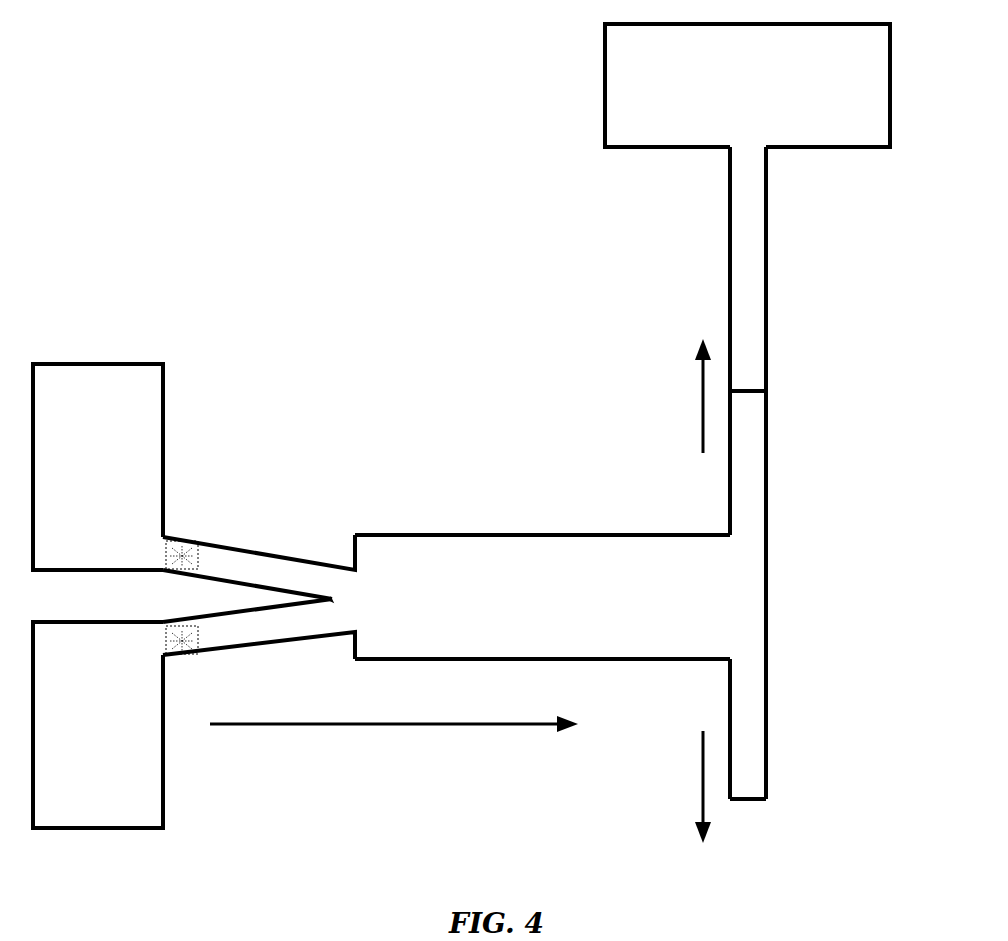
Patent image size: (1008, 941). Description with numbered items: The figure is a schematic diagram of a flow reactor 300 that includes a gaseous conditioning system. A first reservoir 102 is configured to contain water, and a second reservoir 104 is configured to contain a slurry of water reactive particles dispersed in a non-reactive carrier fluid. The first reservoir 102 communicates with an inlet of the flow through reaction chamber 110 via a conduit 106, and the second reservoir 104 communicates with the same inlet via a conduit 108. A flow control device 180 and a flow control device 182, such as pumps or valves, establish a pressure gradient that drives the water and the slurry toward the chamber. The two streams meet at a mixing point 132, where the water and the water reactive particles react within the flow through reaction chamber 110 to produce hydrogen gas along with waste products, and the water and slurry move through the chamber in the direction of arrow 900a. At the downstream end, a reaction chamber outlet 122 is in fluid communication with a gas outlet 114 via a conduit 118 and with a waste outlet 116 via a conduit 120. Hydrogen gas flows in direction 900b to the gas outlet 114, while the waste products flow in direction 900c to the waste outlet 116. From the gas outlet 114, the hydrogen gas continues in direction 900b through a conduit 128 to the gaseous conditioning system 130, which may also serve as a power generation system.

The flow reactor 300 is at (99, 232).
The first reservoir 102 is at (98, 467).
The second reservoir 104 is at (98, 725).
The conduit 106 is at (258, 540).
The conduit 108 is at (258, 643).
The flow through reaction chamber 110 is at (542, 597).
The mixing point 132 is at (334, 600).
The flow control device 180 is at (170, 543).
The flow control device 182 is at (170, 658).
The reaction chamber outlet 122 is at (728, 571).
The gaseous conditioning system 130 is at (747, 85).
The conduit 128 is at (768, 276).
The gas outlet 114 is at (766, 388).
The conduit 118 is at (768, 469).
The conduit 120 is at (768, 720).
The waste outlet 116 is at (745, 802).
The arrow 900a is at (258, 726).
The direction 900b is at (702, 388).
The direction 900c is at (702, 773).